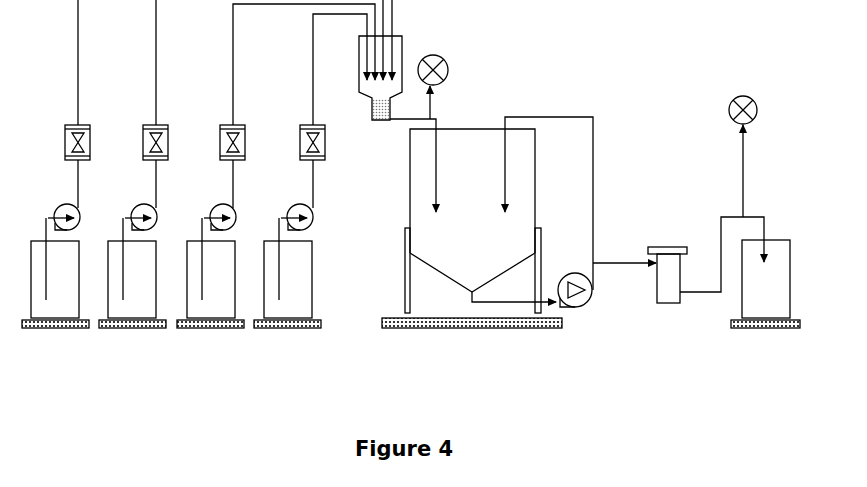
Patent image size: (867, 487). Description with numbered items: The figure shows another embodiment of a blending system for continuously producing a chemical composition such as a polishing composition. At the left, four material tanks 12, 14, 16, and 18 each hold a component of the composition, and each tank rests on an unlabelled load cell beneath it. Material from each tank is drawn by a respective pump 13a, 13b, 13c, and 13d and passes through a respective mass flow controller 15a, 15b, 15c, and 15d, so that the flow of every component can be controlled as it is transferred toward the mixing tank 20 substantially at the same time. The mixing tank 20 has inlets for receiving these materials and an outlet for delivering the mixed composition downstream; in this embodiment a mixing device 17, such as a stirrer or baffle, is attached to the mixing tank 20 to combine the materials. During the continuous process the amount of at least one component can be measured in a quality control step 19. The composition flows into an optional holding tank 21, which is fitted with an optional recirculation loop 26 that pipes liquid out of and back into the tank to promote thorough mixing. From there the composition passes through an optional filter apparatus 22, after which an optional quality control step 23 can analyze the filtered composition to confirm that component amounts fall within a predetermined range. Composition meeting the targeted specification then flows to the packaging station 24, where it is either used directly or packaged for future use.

The material tank 12 is at (55, 287).
The material tank 14 is at (132, 287).
The material tank 16 is at (210, 287).
The material tank 18 is at (287, 287).
The pump 13a is at (56, 207).
The pump 13b is at (133, 207).
The pump 13c is at (212, 207).
The pump 13d is at (289, 207).
The mass flow controller 15a is at (60, 104).
The mass flow controller 15b is at (138, 104).
The mass flow controller 15c is at (280, 106).
The mass flow controller 15d is at (316, 111).
The mixing device 17 is at (375, 126).
The quality control step 19 is at (443, 87).
The mixing tank 20 is at (366, 60).
The holding tank 21 is at (487, 222).
The filter apparatus 22 is at (678, 260).
The quality control step 23 is at (755, 156).
The packaging station 24 is at (765, 284).
The recirculation loop 26 is at (590, 297).